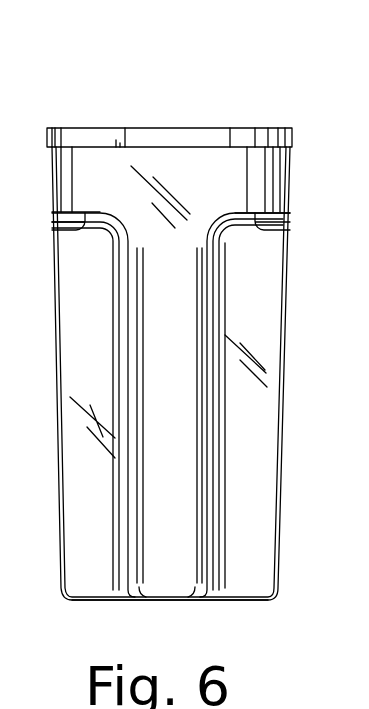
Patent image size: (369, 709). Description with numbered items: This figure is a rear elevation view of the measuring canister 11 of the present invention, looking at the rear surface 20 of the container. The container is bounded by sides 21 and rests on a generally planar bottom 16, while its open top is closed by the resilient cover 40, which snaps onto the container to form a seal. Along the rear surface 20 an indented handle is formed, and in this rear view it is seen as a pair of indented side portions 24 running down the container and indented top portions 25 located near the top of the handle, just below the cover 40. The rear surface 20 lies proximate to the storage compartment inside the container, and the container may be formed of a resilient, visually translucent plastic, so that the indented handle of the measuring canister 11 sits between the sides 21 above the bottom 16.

The measuring canister 11 is at (91, 102).
The resilient cover 40 is at (165, 133).
The rear surface 20 is at (265, 181).
The sides 21 is at (57, 395).
The indented top portions 25 is at (62, 232).
The indented side portions 24 is at (128, 492).
The bottom 16 is at (243, 601).